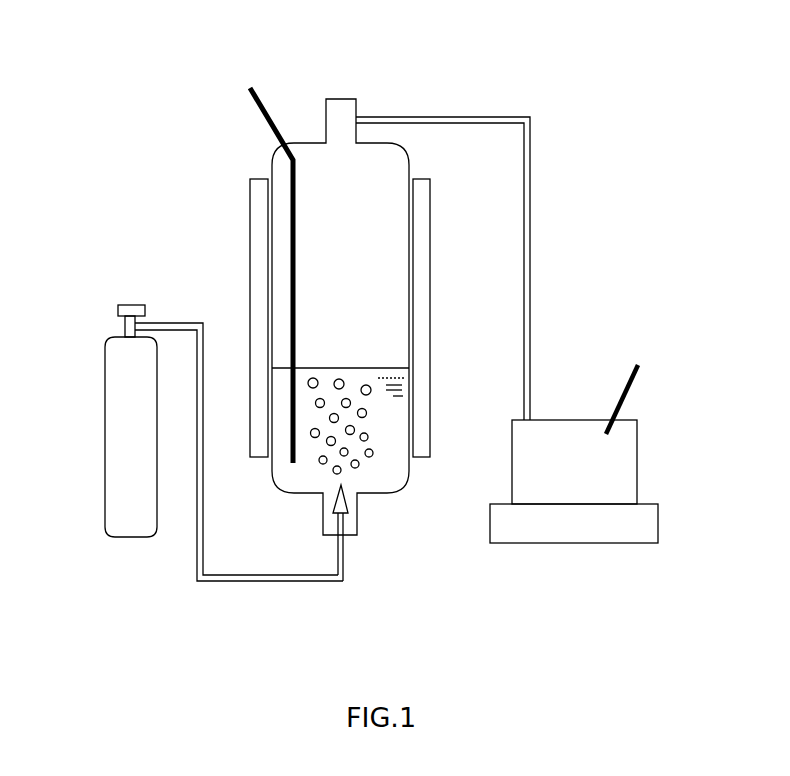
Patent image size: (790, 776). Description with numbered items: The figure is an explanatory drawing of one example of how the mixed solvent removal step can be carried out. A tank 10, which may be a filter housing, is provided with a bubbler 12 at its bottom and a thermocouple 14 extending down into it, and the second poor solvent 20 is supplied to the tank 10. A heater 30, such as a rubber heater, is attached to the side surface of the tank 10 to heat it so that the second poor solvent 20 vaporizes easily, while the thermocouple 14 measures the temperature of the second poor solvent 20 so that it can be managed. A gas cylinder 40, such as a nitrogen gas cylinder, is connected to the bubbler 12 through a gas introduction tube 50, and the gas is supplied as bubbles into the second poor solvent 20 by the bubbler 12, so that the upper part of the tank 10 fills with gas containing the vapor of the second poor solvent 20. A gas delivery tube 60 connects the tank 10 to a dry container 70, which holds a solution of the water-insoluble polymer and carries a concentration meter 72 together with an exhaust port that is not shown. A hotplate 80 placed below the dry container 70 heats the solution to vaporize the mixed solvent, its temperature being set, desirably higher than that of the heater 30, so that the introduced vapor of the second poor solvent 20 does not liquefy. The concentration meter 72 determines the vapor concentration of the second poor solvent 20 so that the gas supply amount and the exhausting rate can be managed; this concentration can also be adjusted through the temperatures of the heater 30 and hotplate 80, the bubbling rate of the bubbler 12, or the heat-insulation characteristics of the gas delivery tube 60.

The tank 10 is at (271, 160).
The bubbler 12 is at (348, 503).
The thermocouple 14 is at (269, 112).
The second poor solvent 20 is at (388, 463).
The heater 30 is at (250, 247).
The gas cylinder 40 is at (103, 377).
The gas introduction tube 50 is at (227, 582).
The gas delivery tube 60 is at (530, 208).
The dry container 70 is at (637, 458).
The concentration meter 72 is at (640, 377).
The hotplate 80 is at (658, 527).